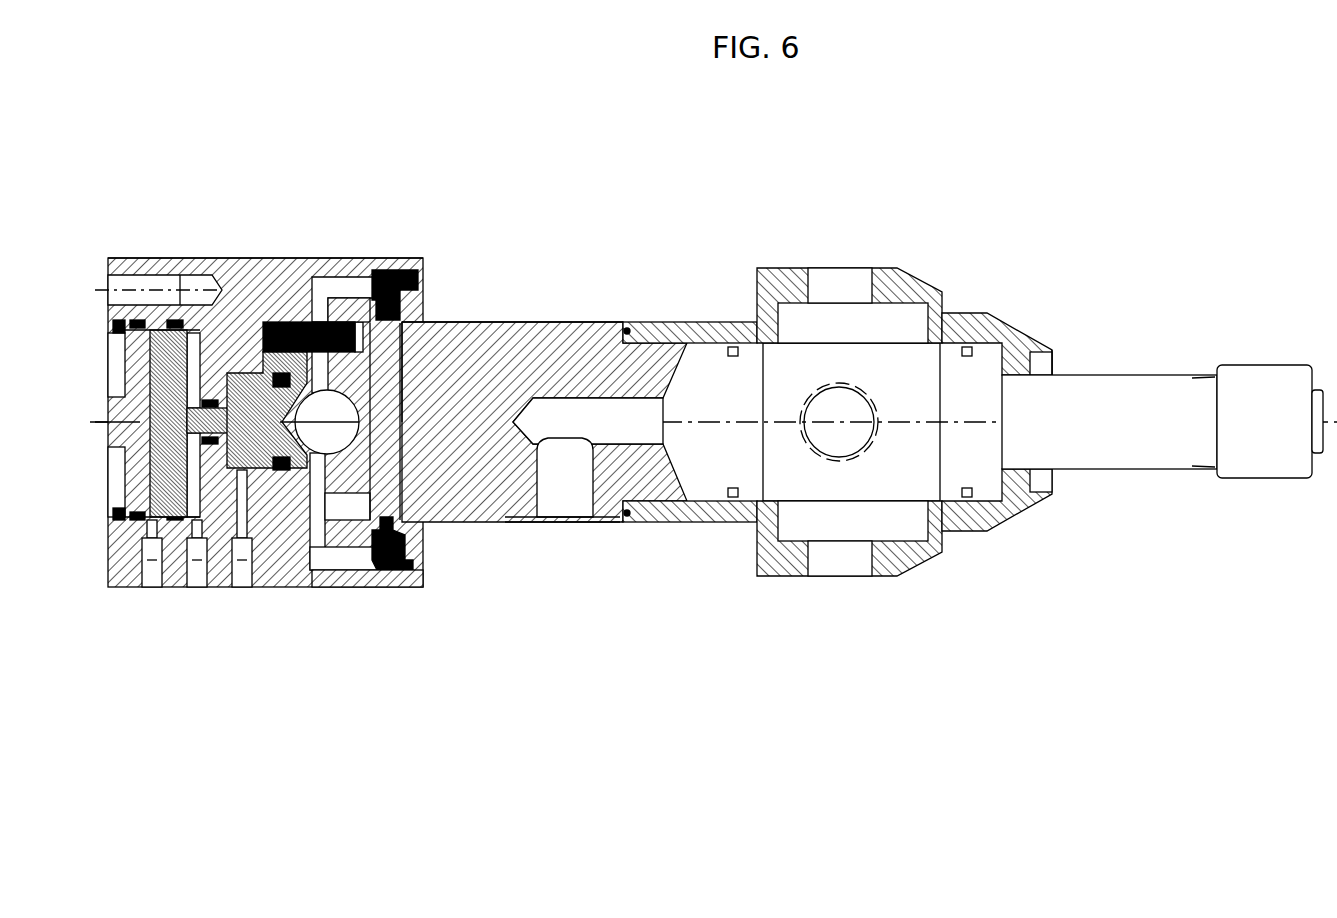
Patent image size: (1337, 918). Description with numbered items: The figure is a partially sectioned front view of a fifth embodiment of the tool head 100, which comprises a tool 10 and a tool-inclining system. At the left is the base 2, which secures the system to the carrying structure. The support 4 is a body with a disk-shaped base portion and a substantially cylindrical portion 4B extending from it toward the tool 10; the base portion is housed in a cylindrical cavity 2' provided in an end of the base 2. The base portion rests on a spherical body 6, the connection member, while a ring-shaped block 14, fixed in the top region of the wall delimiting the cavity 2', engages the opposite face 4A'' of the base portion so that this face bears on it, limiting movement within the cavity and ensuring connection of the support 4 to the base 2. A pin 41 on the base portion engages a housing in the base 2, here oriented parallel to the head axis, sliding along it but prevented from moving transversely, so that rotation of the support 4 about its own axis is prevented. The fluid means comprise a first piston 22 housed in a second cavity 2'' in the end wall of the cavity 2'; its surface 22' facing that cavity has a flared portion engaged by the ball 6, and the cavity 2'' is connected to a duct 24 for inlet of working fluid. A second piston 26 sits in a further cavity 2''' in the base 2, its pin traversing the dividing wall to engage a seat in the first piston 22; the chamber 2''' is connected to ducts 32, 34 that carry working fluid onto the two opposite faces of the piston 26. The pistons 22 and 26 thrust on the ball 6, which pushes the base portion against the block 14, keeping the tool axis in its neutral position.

The base 2 is at (259, 377).
The cylindrical cavity 2' is at (351, 238).
The second cavity 2'' is at (259, 328).
The further cavity 2''' is at (125, 423).
The pin 41 is at (287, 332).
The second piston 26 is at (167, 452).
The first piston 22 is at (263, 527).
The surface of the first piston 22' is at (337, 515).
The spherical body 6 is at (340, 437).
The duct 32 is at (143, 580).
The duct 34 is at (193, 580).
The duct 24 is at (253, 573).
The face of the base portion 4A'' is at (446, 573).
The ring-shaped block 14 is at (410, 572).
The support 4 is at (572, 316).
The cylindrical portion 4B is at (485, 343).
The tool 10 is at (1162, 365).
The tool head 100 is at (966, 226).